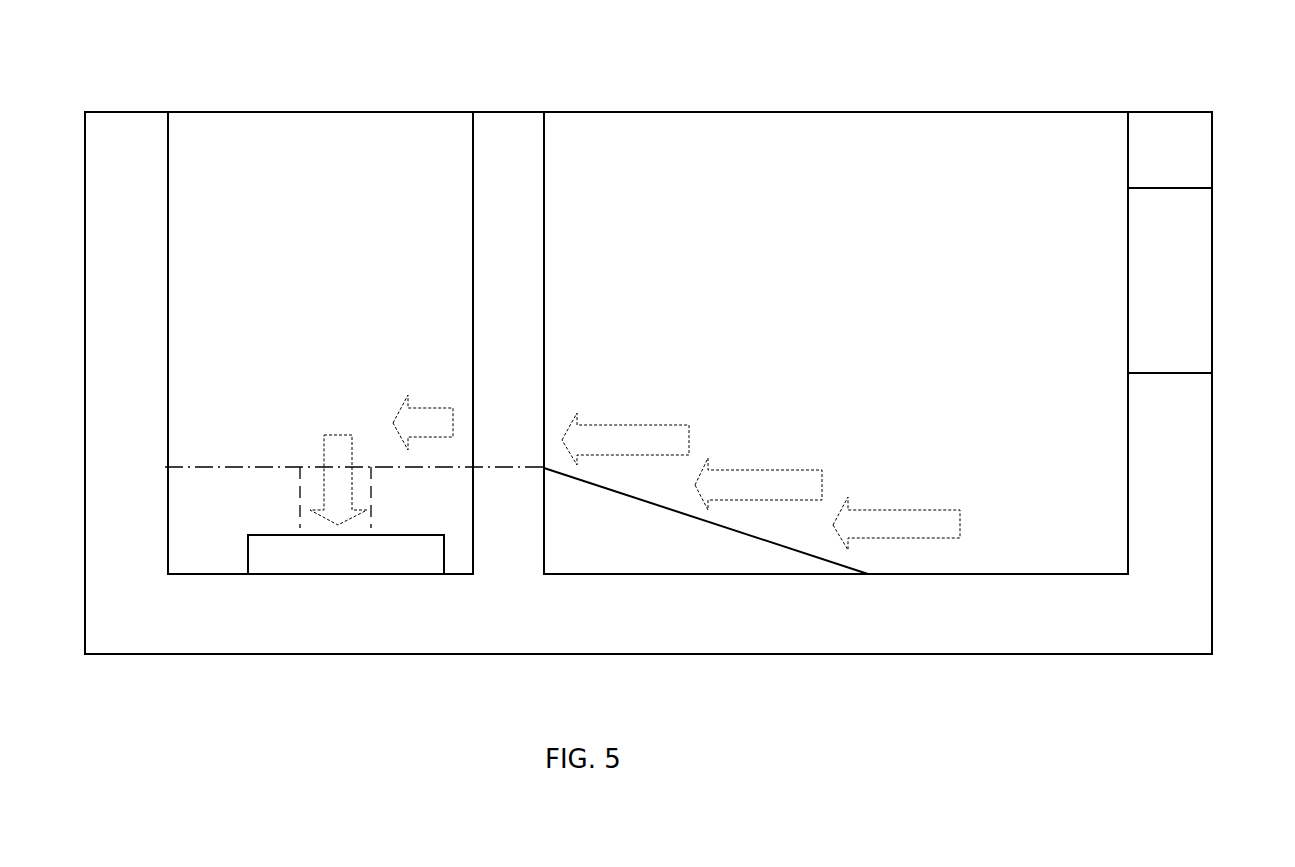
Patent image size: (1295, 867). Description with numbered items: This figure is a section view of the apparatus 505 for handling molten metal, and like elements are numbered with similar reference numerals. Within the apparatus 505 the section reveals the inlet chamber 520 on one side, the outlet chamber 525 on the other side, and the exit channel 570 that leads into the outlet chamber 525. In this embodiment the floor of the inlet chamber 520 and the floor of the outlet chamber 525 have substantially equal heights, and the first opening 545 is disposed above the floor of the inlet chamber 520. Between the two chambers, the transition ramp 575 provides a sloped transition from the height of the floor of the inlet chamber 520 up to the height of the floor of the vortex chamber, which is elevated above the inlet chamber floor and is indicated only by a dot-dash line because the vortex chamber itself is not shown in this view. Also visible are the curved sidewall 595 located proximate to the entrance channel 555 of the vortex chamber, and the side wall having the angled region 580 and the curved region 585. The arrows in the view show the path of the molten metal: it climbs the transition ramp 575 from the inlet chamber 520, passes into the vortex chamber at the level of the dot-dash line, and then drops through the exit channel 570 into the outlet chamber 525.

The apparatus 505 is at (148, 70).
The inlet chamber 520 is at (878, 331).
The outlet chamber 525 is at (346, 313).
The first opening 545 is at (1180, 237).
The entrance channel 555 is at (542, 138).
The exit channel 570 is at (278, 558).
The transition ramp 575 is at (607, 540).
The angled region 580 is at (1116, 157).
The curved region 585 is at (1117, 122).
The curved sidewall 595 is at (542, 302).